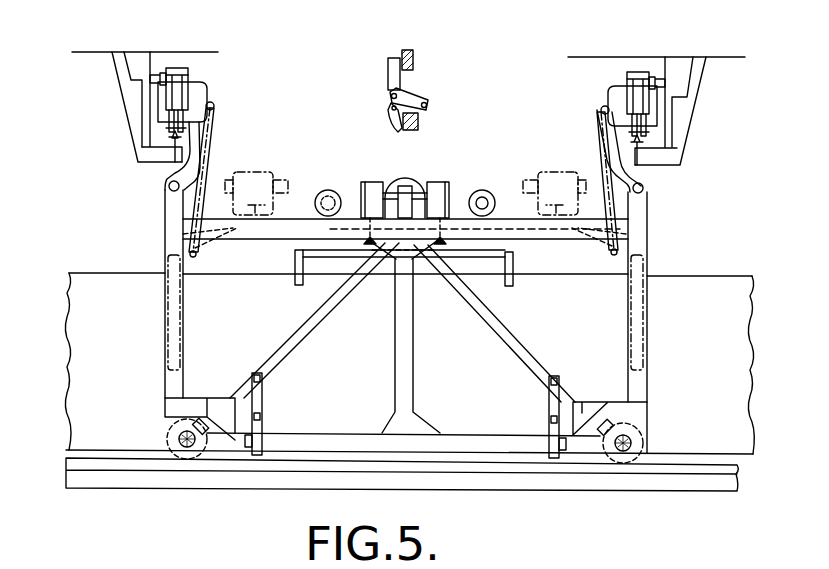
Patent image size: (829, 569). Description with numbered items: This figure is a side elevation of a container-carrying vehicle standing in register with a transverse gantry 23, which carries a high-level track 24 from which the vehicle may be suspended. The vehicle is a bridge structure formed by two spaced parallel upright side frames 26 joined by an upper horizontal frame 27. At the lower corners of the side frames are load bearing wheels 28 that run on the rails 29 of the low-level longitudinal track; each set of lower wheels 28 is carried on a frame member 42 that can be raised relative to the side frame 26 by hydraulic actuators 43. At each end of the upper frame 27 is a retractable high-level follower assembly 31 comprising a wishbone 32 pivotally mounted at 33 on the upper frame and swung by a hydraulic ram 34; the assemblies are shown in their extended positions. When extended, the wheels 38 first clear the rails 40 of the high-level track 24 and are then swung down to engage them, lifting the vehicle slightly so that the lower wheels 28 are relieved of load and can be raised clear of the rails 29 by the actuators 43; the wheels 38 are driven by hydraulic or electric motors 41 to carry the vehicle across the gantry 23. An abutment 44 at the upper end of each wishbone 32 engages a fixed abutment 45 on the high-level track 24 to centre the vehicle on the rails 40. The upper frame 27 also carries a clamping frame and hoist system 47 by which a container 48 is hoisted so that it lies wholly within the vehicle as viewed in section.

The transverse gantry 23 is at (112, 75).
The high-level track 24 is at (128, 121).
The upright side frame 26 is at (508, 333).
The upper horizontal frame 27 is at (293, 231).
The load bearing wheel 28 is at (647, 447).
The rail 29 is at (672, 482).
The high-level follower assembly 31 is at (422, 79).
The wishbone 32 is at (193, 148).
The pivot 33 is at (172, 190).
The hydraulic ram 34 is at (193, 208).
The wheel 38 is at (177, 125).
The rail 40 is at (173, 139).
The motor 41 is at (197, 108).
The frame member 42 is at (305, 442).
The hydraulic actuator 43 is at (398, 80).
The abutment 44 is at (163, 78).
The fixed abutment 45 is at (155, 74).
The clamping frame and hoist system 47 is at (447, 178).
The container 48 is at (665, 293).